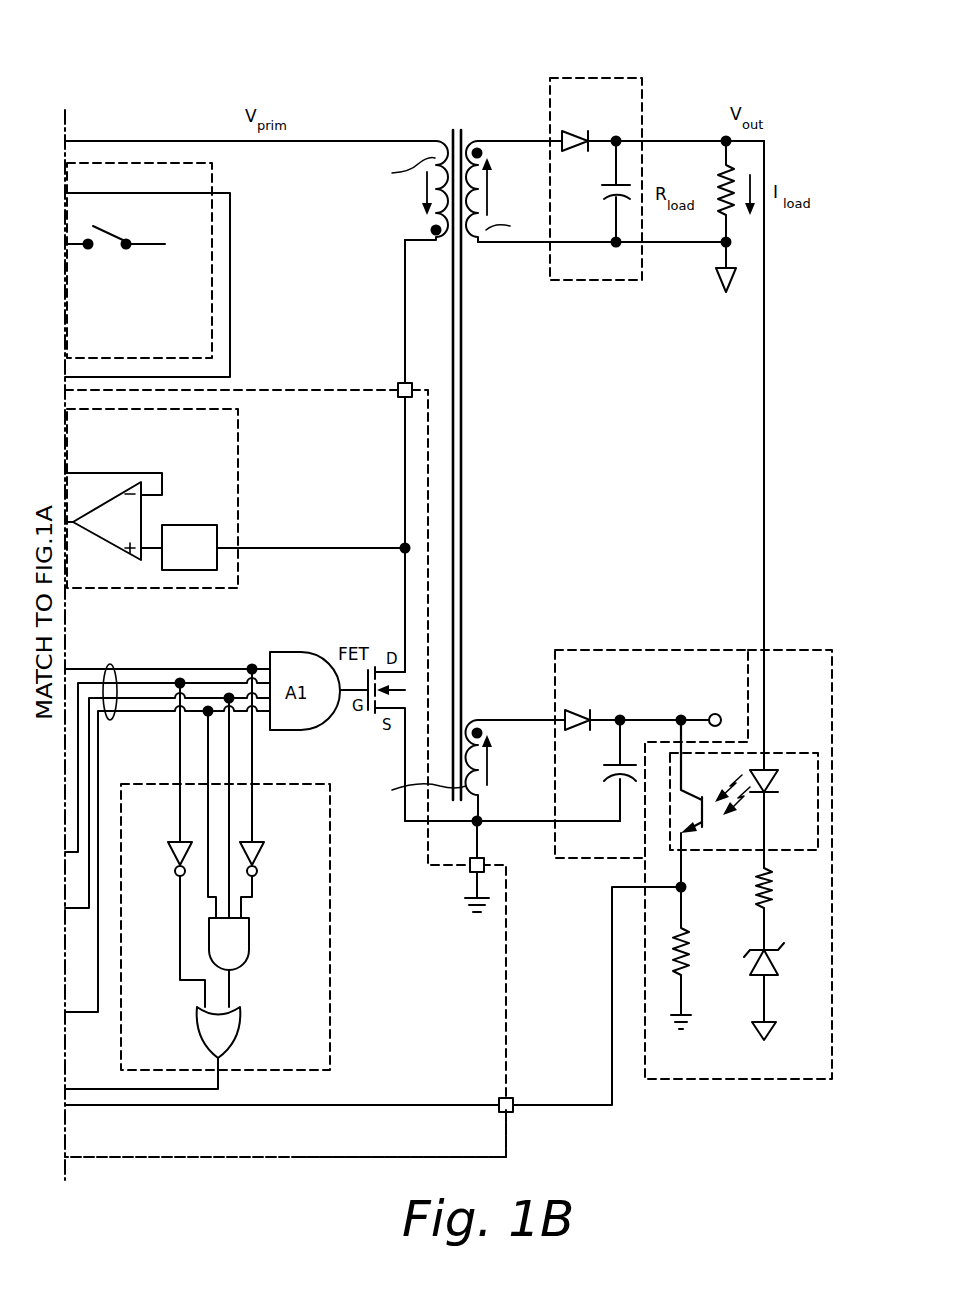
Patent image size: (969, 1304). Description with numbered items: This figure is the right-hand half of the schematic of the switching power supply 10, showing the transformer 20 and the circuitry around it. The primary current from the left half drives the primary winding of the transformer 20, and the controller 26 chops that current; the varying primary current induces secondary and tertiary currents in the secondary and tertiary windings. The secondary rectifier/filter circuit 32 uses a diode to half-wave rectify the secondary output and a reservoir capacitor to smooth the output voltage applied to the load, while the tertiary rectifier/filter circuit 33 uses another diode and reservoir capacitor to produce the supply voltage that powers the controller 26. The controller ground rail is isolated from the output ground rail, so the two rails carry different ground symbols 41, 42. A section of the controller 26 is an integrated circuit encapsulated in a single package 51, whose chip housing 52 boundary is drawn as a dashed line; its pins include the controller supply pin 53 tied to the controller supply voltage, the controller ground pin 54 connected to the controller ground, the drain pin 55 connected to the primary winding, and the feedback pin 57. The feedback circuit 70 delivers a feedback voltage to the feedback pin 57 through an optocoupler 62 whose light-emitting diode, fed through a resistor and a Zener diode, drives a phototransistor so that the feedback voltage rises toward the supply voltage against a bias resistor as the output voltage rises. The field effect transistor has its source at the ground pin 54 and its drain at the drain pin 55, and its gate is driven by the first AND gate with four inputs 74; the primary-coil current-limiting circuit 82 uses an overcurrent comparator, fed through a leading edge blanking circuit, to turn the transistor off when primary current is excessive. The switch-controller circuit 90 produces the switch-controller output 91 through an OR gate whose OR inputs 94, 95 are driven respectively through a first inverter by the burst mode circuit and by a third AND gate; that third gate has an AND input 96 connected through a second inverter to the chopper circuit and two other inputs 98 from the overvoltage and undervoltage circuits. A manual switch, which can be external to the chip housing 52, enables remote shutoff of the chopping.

The switching power supply 10 is at (500, 48).
The controller 26 is at (128, 131).
The secondary rectifier/filter circuit 32 is at (600, 78).
The transformer 20 is at (447, 140).
The drain pin 55 is at (397, 398).
The primary-coil current-limiting circuit 82 is at (172, 590).
The inputs of first AND gate A1 74 is at (113, 663).
The inputs of third AND gate A3 98 is at (232, 768).
The switch-controller circuit 90 is at (155, 784).
The AND input 96 is at (255, 887).
The OR input 94 is at (197, 994).
The OR input 95 is at (232, 993).
The switch-controller output 91 is at (157, 1092).
The tertiary rectifier/filter circuit 33 is at (598, 650).
The controller supply pin 53 is at (706, 714).
The controller ground pin 54 is at (467, 873).
The feedback circuit 70 is at (740, 866).
The optocoupler 62 is at (778, 752).
The ground symbol 41 is at (684, 1036).
The ground symbol 42 is at (760, 1040).
The feedback pin 57 is at (500, 1098).
The package 51 is at (508, 1140).
The chip housing 52 is at (335, 1138).